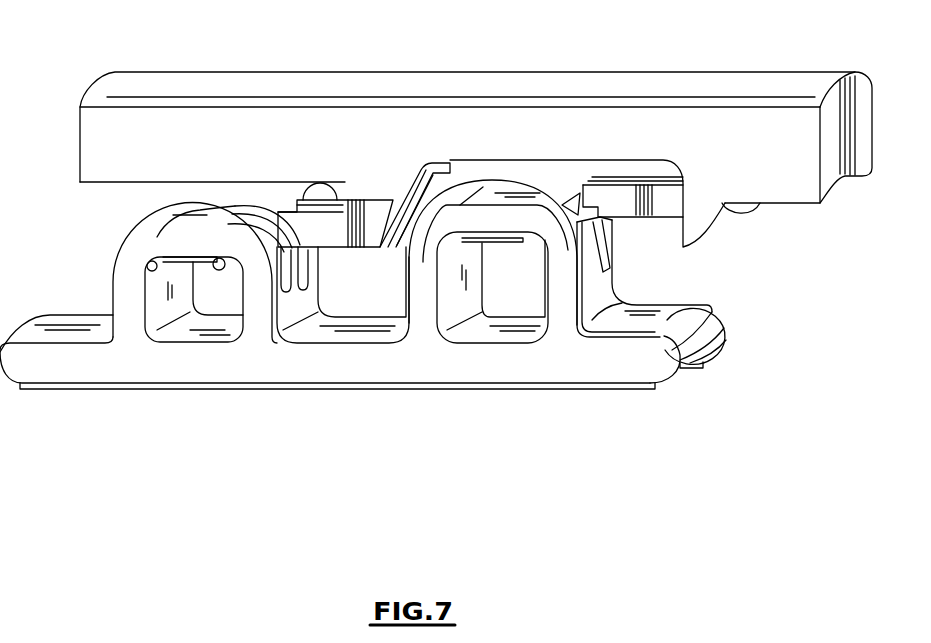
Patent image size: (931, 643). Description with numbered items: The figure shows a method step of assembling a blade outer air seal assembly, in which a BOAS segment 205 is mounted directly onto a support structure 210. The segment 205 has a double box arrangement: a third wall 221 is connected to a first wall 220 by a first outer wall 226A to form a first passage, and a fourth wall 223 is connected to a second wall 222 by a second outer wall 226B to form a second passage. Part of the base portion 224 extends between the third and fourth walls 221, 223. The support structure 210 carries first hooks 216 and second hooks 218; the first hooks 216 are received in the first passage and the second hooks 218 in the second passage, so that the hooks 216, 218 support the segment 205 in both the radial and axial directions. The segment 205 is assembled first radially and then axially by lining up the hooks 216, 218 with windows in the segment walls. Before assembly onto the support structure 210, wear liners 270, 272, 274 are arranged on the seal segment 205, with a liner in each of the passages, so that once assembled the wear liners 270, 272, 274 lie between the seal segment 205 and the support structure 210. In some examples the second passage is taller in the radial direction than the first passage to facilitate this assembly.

The support structure 210 is at (448, 88).
The first hook 216 is at (317, 232).
The wear liner 272 is at (453, 240).
The second hook 218 is at (623, 193).
The first outer wall 226A is at (182, 245).
The second outer wall 226B is at (527, 220).
The first wall 220 is at (128, 290).
The third wall 221 is at (258, 302).
The fourth wall 223 is at (422, 283).
The second wall 222 is at (560, 278).
The wear liner 274 is at (227, 257).
The wear liner 270 is at (620, 317).
The BOAS segment 205 is at (640, 360).
The base portion 224 is at (190, 368).